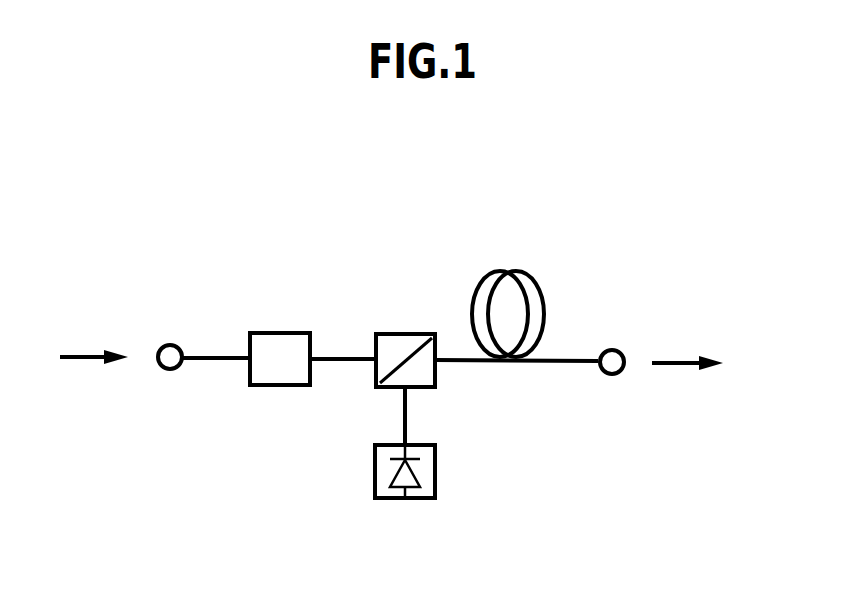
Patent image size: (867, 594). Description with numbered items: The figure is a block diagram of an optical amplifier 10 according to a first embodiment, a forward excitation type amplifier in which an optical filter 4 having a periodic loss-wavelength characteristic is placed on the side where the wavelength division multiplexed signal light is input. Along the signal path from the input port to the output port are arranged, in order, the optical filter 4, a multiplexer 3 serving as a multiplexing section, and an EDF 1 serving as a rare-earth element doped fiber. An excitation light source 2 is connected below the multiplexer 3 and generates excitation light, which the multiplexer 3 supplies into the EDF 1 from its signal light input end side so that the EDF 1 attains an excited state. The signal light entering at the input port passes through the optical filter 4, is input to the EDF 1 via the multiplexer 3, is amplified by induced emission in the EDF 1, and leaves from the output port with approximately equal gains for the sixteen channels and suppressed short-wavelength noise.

The optical amplifier 10 is at (650, 224).
The EDF 1 is at (528, 275).
The excitation light source 2 is at (435, 447).
The multiplexer 3 is at (374, 335).
The optical filter 4 is at (250, 333).